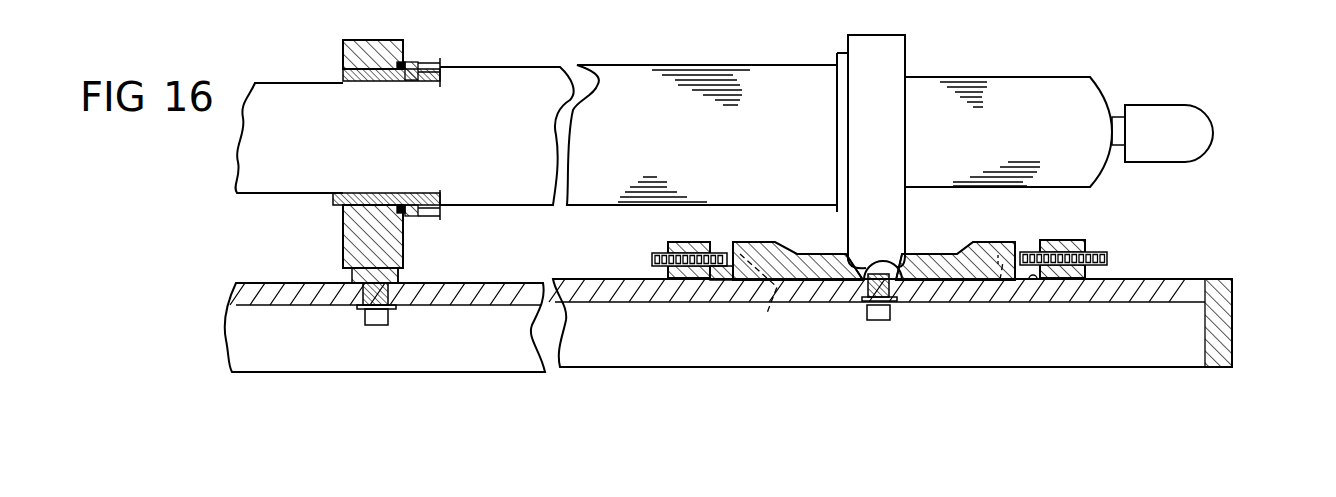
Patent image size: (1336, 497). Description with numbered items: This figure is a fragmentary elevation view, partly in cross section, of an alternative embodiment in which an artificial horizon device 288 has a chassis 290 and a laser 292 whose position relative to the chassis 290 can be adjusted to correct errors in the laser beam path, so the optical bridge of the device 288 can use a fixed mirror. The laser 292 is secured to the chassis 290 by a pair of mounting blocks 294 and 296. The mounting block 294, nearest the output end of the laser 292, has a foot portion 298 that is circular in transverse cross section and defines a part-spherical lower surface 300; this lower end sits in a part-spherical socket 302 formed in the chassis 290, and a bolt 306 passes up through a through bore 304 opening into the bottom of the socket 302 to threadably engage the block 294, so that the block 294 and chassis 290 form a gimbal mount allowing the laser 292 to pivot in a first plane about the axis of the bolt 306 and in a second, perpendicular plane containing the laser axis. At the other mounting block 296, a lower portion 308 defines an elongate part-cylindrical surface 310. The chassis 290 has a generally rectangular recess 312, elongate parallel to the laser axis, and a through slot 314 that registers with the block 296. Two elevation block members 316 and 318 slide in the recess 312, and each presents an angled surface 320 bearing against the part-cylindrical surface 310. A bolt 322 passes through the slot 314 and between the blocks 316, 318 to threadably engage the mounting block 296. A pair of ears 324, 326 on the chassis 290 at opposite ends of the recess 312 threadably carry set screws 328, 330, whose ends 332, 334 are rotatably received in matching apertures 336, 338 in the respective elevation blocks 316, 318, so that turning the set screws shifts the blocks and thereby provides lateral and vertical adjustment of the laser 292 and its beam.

The artificial horizon device 288 is at (1108, 73).
The chassis 290 is at (1210, 283).
The laser 292 is at (722, 142).
The mounting block 294 is at (392, 42).
The mounting block 296 is at (893, 53).
The foot portion 298 is at (353, 275).
The part-spherical lower surface 300 is at (360, 296).
The part-spherical socket 302 is at (412, 303).
The through bore 304 is at (400, 277).
The bolt 306 is at (387, 314).
The lower portion 308 is at (890, 252).
The part-cylindrical surface 310 is at (913, 252).
The rectangular recess 312 is at (1033, 282).
The through slot 314 is at (898, 292).
The elevation block member 316 is at (778, 252).
The elevation block member 318 is at (982, 250).
The angled surface 320 is at (850, 246).
The bolt 322 is at (889, 315).
The ear 324 is at (702, 250).
The ear 326 is at (1068, 245).
The set screw 328 is at (660, 250).
The set screw 330 is at (1095, 250).
The set screw end 332 is at (704, 288).
The set screw end 334 is at (998, 282).
The aperture 336 is at (767, 313).
The aperture 338 is at (1000, 280).